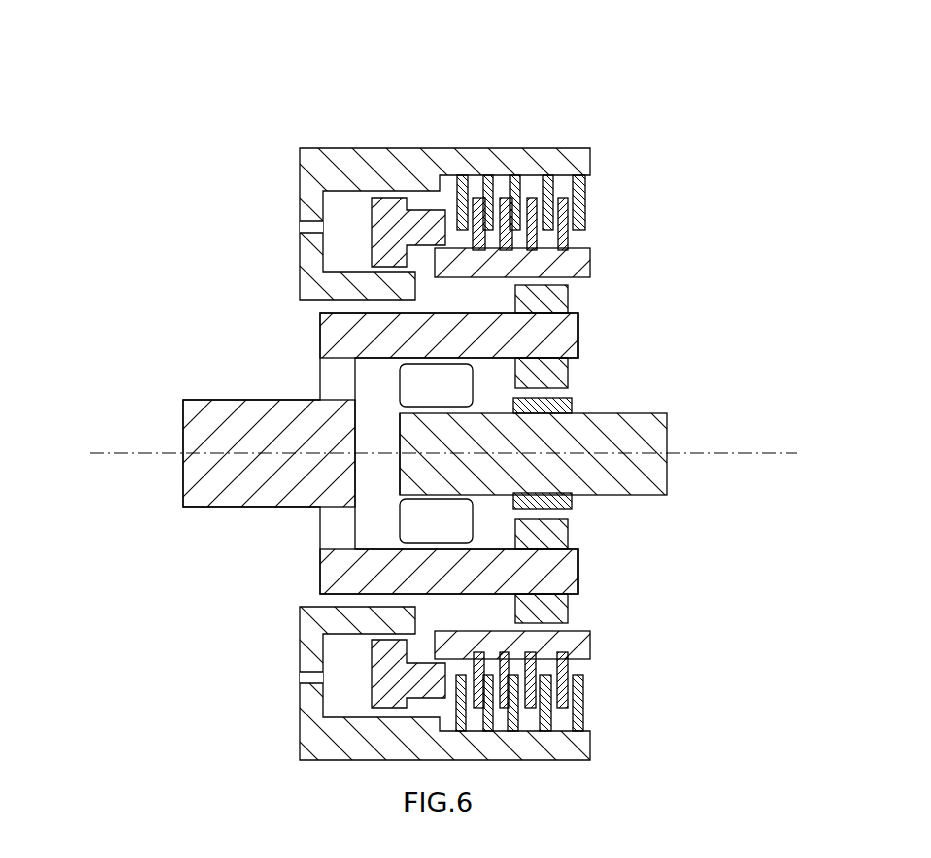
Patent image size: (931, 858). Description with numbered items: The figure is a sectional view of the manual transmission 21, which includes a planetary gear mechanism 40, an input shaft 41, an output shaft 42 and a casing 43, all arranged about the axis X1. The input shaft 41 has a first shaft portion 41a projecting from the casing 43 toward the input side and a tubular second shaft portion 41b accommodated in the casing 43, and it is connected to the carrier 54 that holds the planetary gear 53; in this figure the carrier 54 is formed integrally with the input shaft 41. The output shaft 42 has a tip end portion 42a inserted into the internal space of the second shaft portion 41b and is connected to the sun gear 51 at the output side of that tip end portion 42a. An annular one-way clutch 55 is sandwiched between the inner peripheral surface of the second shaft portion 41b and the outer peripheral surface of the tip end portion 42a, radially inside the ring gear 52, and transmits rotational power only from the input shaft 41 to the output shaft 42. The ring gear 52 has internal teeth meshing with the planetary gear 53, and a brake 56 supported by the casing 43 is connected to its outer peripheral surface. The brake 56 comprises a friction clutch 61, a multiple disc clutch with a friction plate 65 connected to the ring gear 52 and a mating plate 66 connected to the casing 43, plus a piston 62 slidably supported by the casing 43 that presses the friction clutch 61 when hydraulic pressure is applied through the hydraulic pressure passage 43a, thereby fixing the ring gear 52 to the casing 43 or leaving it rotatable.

The manual transmission 21 is at (296, 120).
The planetary gear mechanism 40 is at (468, 454).
The input shaft 41 is at (354, 453).
The first shaft portion 41a is at (248, 398).
The second shaft portion 41b is at (318, 337).
The output shaft 42 is at (489, 468).
The tip end portion 42a is at (403, 482).
The casing 43 is at (406, 454).
The hydraulic pressure passage 43a is at (322, 230).
The sun gear 51 is at (572, 403).
The ring gear 52 is at (590, 263).
The planetary gear 53 is at (568, 300).
The carrier 54 is at (578, 342).
The one-way clutch 55 is at (400, 387).
The brake 56 is at (368, 45).
The friction clutch 61 is at (607, 86).
The piston 62 is at (383, 203).
The friction plate 65 is at (556, 192).
The mating plate 66 is at (528, 195).
The axis X1 is at (735, 453).